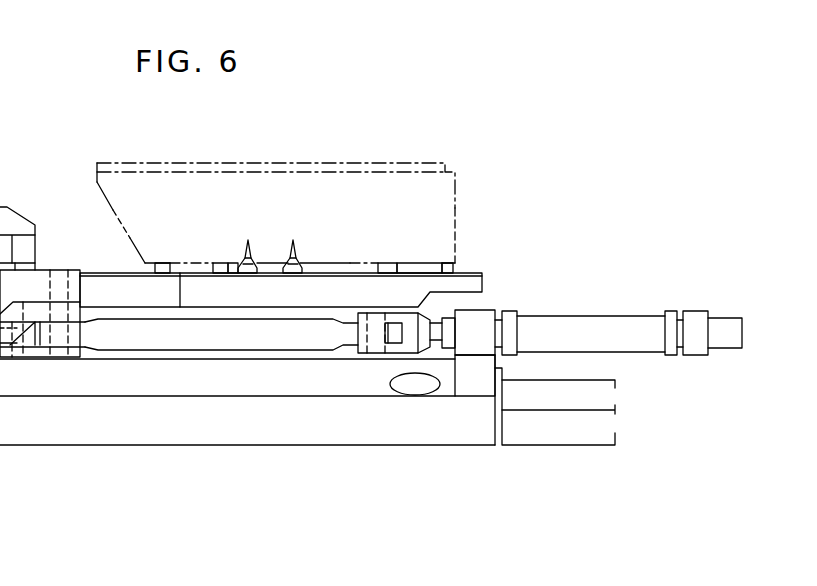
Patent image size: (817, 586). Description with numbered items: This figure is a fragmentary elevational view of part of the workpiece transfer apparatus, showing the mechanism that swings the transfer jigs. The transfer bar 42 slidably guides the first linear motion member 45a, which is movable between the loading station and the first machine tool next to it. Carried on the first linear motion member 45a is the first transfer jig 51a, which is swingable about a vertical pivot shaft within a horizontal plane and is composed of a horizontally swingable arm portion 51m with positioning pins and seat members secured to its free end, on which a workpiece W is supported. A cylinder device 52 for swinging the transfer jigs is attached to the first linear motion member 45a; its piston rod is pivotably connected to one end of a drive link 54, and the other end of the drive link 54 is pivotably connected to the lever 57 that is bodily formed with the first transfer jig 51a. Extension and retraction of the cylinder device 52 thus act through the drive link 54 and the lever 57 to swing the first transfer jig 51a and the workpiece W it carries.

The workpiece W is at (450, 200).
The arm portion 51m is at (128, 283).
The first transfer jig 51a is at (486, 279).
The lever 57 is at (40, 278).
The drive link 54 is at (243, 340).
The cylinder device 52 is at (603, 322).
The first linear motion member 45a is at (100, 433).
The transfer bar 42 is at (557, 428).